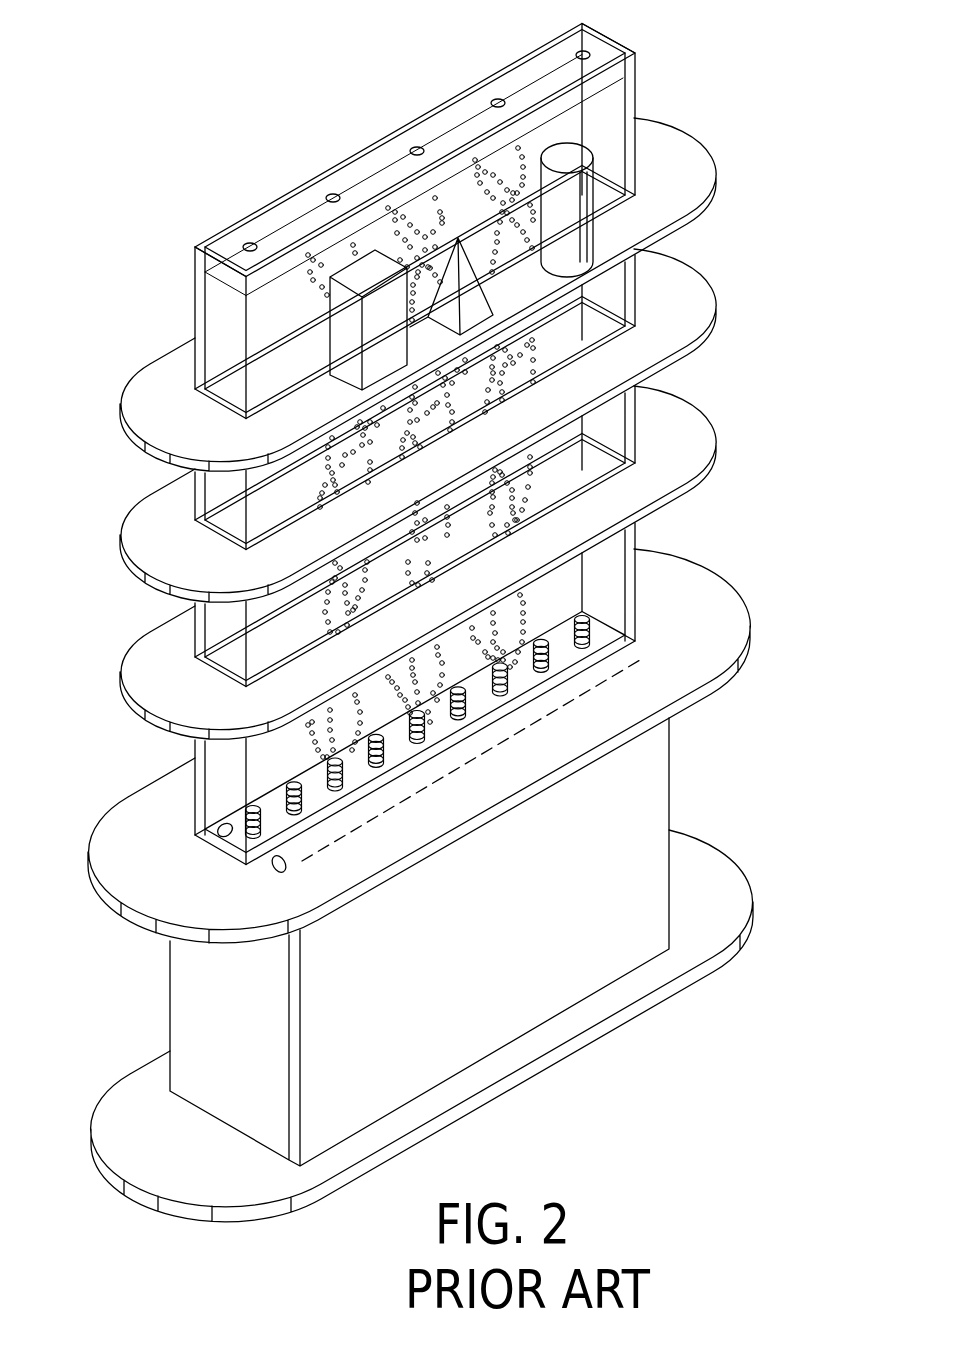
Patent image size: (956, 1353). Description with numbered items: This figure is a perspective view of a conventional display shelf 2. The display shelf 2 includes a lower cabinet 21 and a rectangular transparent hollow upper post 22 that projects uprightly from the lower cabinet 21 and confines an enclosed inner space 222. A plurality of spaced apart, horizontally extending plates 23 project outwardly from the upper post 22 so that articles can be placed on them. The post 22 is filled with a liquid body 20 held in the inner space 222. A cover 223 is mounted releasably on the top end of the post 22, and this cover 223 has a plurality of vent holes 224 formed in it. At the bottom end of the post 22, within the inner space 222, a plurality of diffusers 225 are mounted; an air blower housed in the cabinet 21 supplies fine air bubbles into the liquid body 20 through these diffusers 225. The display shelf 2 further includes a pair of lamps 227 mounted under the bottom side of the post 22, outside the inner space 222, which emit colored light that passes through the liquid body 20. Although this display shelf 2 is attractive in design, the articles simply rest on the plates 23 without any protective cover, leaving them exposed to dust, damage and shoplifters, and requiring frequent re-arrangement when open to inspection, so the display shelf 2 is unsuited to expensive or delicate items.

The display shelf 2 is at (186, 168).
The liquid body 20 is at (618, 87).
The lower cabinet 21 is at (670, 804).
The upper post 22 is at (648, 431).
The plates 23 is at (166, 362).
The inner space 222 is at (613, 114).
The cover 223 is at (525, 88).
The vent holes 224 is at (497, 100).
The diffusers 225 is at (500, 690).
The lamps 227 is at (221, 835).